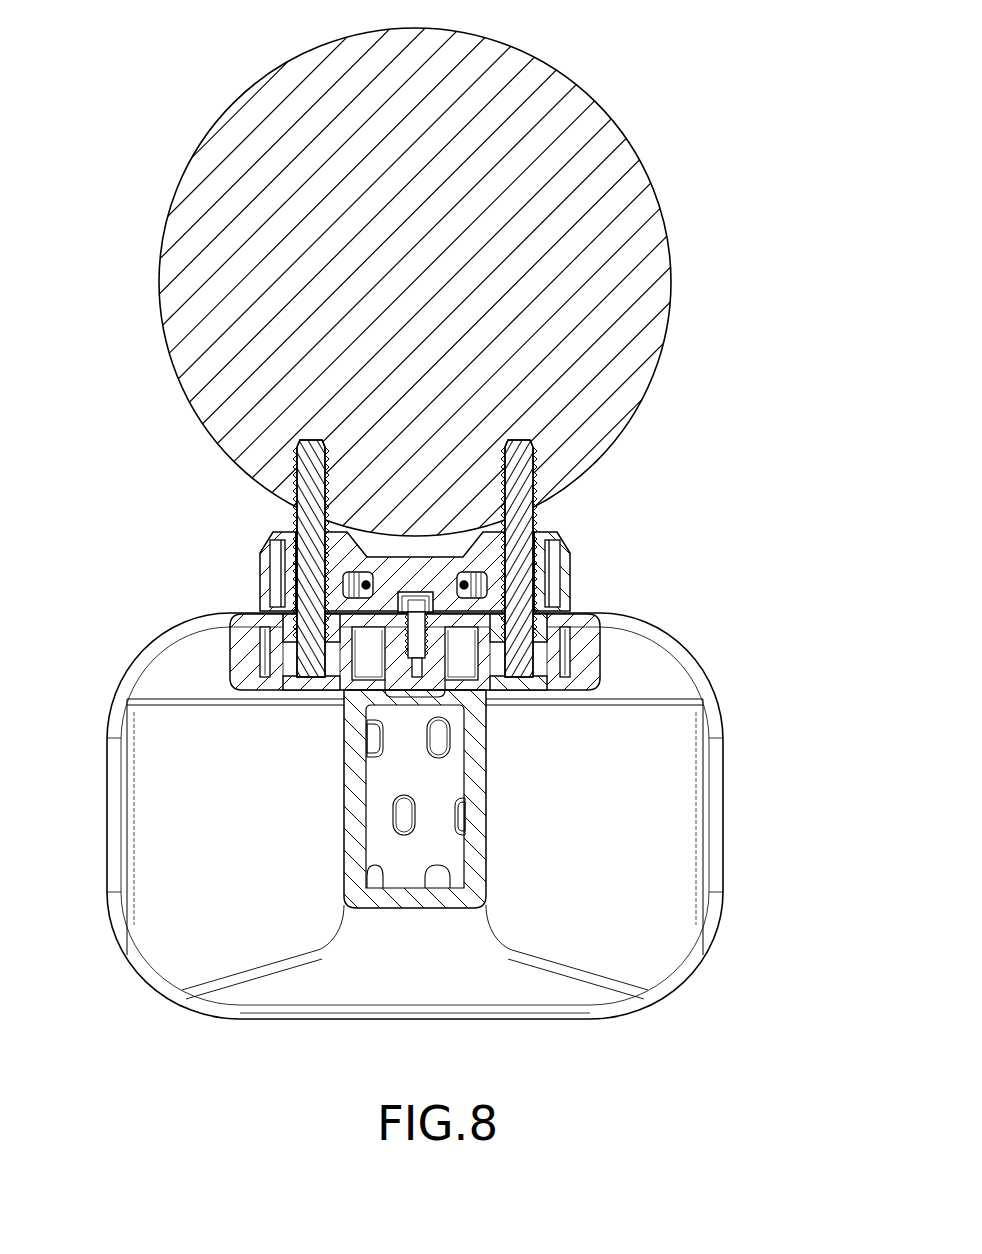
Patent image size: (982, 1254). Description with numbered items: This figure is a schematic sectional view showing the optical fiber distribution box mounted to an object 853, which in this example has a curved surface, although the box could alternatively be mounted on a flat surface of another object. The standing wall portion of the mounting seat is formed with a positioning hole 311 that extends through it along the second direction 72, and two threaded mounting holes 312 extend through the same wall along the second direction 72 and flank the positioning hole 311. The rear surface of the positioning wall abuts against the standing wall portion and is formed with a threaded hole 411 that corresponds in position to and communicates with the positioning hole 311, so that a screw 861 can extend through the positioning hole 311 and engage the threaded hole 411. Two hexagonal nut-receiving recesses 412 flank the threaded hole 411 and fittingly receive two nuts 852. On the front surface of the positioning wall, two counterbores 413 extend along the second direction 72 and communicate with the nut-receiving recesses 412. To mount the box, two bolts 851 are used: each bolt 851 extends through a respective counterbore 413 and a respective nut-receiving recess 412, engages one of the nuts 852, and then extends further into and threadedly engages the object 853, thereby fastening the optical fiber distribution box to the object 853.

The object 853 is at (677, 312).
The screw 861 is at (422, 592).
The bolts 851 is at (538, 510).
The threaded mounting holes 312 is at (548, 568).
The positioning hole 311 is at (490, 603).
The nuts 852 is at (556, 617).
The hexagonal nut-receiving recesses 412 is at (538, 614).
The counterbores 413 is at (527, 662).
The threaded hole 411 is at (466, 655).
The second direction 72 is at (73, 555).